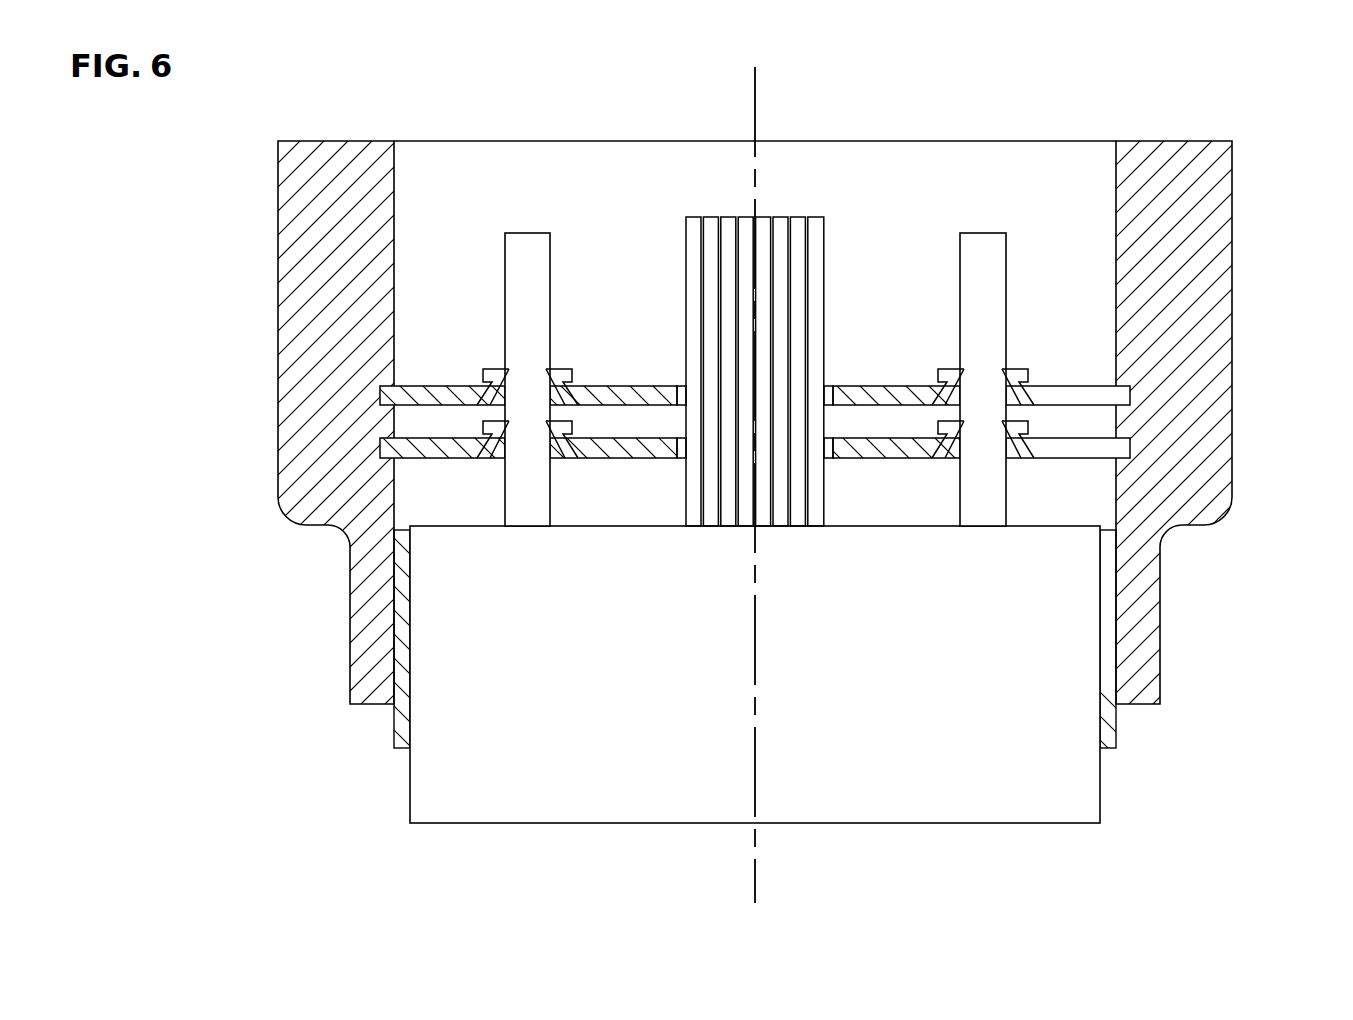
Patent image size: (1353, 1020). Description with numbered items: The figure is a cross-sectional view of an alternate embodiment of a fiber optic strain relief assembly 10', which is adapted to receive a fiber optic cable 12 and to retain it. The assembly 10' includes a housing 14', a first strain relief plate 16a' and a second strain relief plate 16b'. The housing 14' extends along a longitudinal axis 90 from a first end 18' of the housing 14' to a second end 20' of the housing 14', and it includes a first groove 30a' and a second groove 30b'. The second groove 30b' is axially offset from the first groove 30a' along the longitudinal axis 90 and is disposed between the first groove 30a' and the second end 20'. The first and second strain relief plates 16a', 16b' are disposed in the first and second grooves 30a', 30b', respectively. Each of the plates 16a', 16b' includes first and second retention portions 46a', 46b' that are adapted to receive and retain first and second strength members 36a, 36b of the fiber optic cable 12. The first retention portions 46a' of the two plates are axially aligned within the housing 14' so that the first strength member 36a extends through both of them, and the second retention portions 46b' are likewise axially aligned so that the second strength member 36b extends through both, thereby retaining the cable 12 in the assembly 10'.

The fiber optic strain relief assembly 10' is at (676, 485).
The fiber optic cable 12 is at (1108, 808).
The housing 14' is at (676, 460).
The first strain relief plate 16a' is at (1068, 484).
The second strain relief plate 16b' is at (1068, 361).
The first end 18' is at (604, 650).
The second end 20' is at (798, 114).
The first groove 30a' is at (442, 471).
The second groove 30b' is at (442, 371).
The first strength member 36a is at (552, 265).
The second strength member 36b is at (1006, 254).
The first retention portions 46a' is at (563, 420).
The second retention portions 46b' is at (954, 421).
The longitudinal axis 90 is at (755, 120).